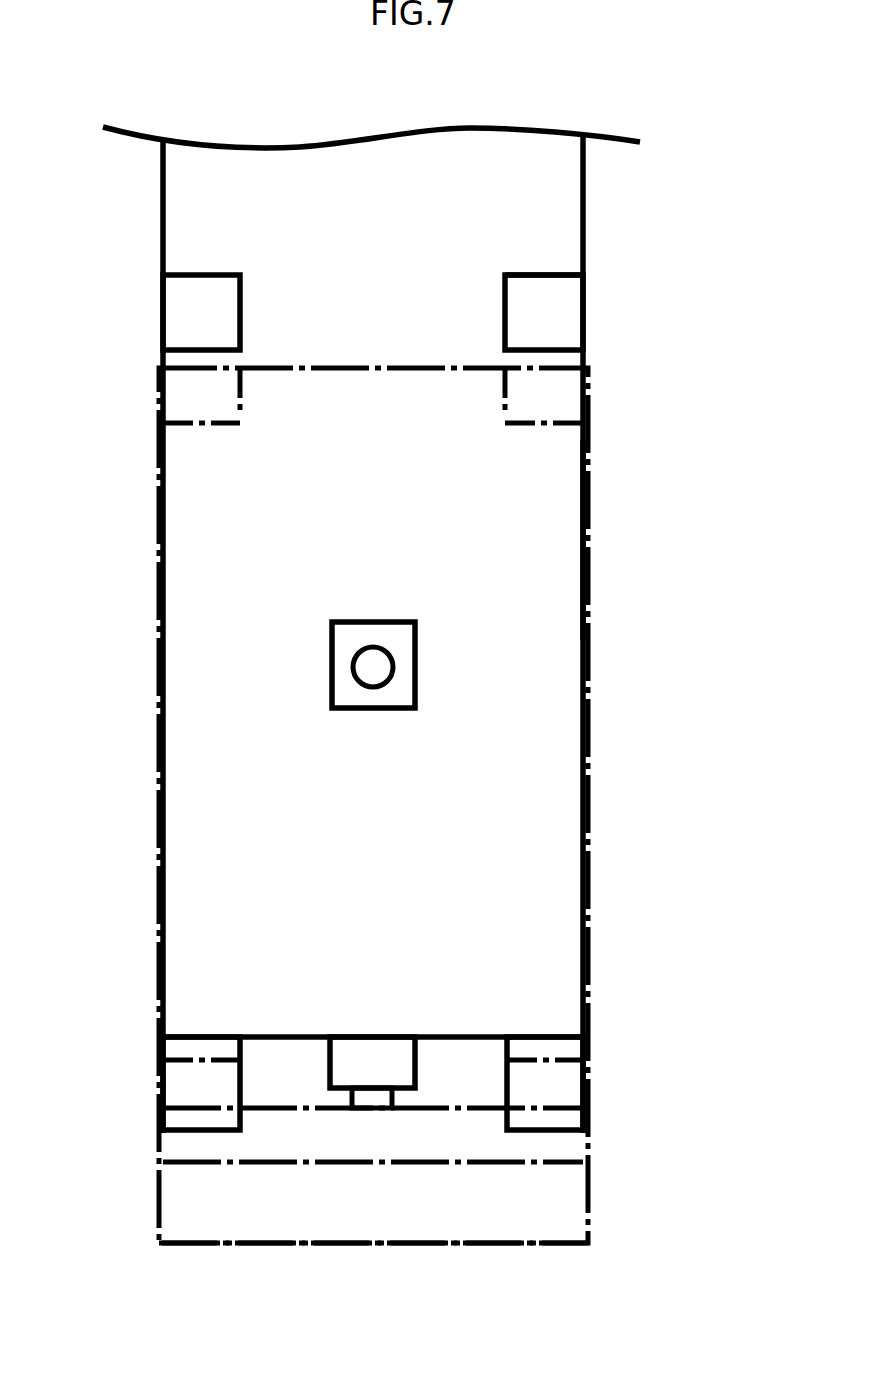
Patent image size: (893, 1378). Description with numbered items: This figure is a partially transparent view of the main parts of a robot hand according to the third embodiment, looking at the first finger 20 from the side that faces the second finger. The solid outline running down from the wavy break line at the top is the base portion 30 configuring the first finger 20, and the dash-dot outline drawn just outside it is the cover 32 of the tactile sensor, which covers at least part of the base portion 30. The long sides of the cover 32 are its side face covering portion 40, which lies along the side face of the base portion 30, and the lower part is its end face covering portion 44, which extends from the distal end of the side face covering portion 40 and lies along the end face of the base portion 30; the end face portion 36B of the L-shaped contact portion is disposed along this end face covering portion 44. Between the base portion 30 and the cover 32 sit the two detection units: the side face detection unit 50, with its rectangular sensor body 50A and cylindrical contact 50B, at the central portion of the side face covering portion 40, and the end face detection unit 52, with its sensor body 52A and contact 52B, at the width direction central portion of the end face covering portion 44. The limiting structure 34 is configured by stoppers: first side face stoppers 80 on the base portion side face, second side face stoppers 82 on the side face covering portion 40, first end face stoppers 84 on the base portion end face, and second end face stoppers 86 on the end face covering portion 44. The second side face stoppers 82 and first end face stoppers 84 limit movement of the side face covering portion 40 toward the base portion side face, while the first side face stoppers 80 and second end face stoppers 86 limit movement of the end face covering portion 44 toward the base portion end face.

The first finger 20 is at (542, 104).
The base portion 30 is at (563, 178).
The cover 32 is at (592, 475).
The limiting structure 34 is at (553, 272).
The end face portion 36B is at (380, 1225).
The side face covering portion 40 is at (570, 545).
The end face covering portion 44 is at (432, 1140).
The side face detection unit 50 is at (528, 664).
The sensor body 50A is at (400, 642).
The contact 50B is at (378, 668).
The end face detection unit 52 is at (529, 1012).
The sensor body 52A is at (387, 1052).
The contact 52B is at (380, 1100).
The first side face stoppers 80 is at (178, 315).
The second side face stoppers 82 is at (178, 392).
The first end face stoppers 84 is at (172, 1120).
The second end face stoppers 86 is at (178, 1090).